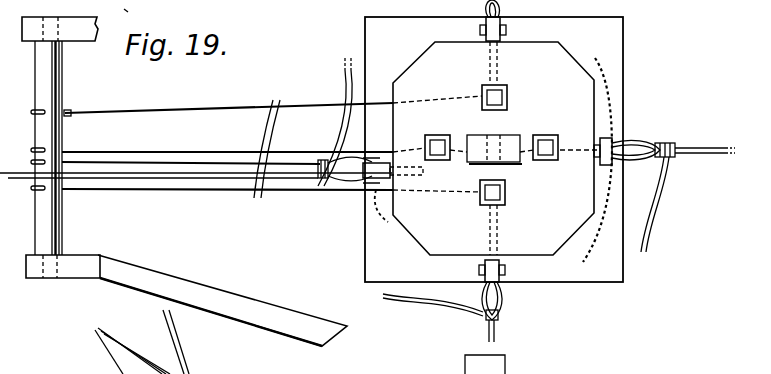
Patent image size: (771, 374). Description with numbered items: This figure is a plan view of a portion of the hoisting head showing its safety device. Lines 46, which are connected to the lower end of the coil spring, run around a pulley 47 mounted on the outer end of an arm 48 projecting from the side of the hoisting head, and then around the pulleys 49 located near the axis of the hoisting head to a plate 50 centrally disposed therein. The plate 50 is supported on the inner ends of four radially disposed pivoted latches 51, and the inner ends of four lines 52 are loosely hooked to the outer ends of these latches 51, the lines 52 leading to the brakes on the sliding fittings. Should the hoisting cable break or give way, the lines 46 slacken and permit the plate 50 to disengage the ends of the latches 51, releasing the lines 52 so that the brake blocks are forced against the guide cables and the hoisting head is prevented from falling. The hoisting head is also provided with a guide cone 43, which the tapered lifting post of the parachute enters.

The guide cone 43 is at (117, 6).
The lines 46 is at (290, 100).
The pulley 47 is at (42, 228).
The arm 48 is at (193, 292).
The pulleys 49 is at (482, 92).
The plate 50 is at (494, 149).
The pivoted latches 51 is at (507, 33).
The lines 52 is at (193, 175).